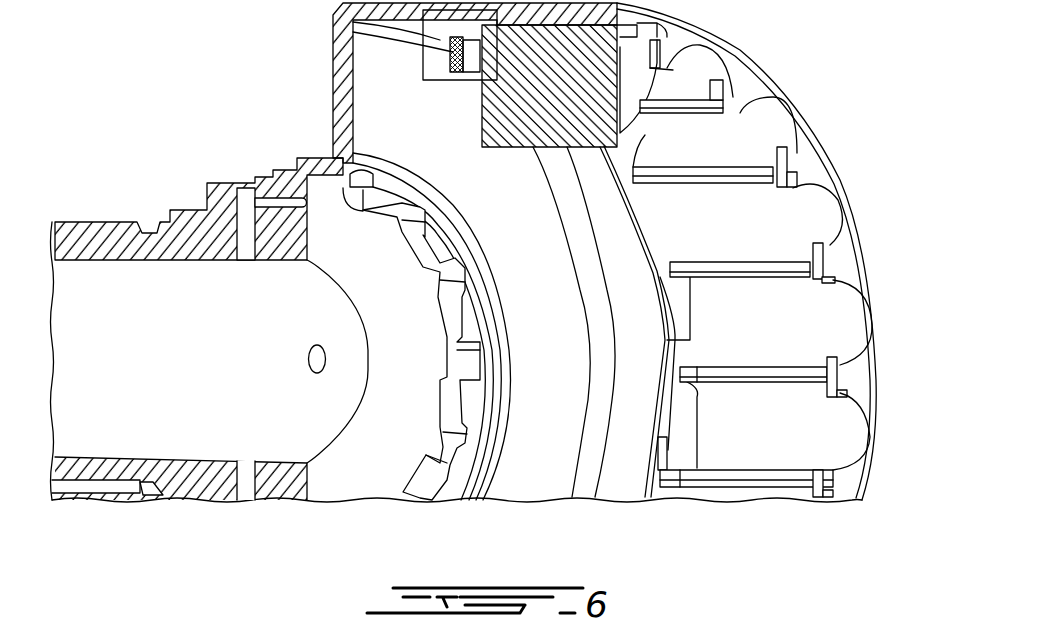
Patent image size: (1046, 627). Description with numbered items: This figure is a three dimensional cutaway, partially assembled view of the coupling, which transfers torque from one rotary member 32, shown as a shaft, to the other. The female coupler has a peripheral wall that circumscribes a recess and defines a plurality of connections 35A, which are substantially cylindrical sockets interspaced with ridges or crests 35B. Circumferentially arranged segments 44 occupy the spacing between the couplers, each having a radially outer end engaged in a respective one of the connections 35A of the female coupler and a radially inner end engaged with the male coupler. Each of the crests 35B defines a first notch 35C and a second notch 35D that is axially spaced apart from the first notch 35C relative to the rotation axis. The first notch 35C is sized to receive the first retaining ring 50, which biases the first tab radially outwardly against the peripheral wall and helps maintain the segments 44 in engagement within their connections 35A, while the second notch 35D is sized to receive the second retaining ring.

The rotary member 32 is at (84, 220).
The segment 44 is at (630, 130).
The first retaining ring 50 is at (662, 216).
The connection 35A is at (807, 330).
The crest 35B is at (790, 377).
The first notch 35C is at (697, 395).
The second notch 35D is at (817, 252).